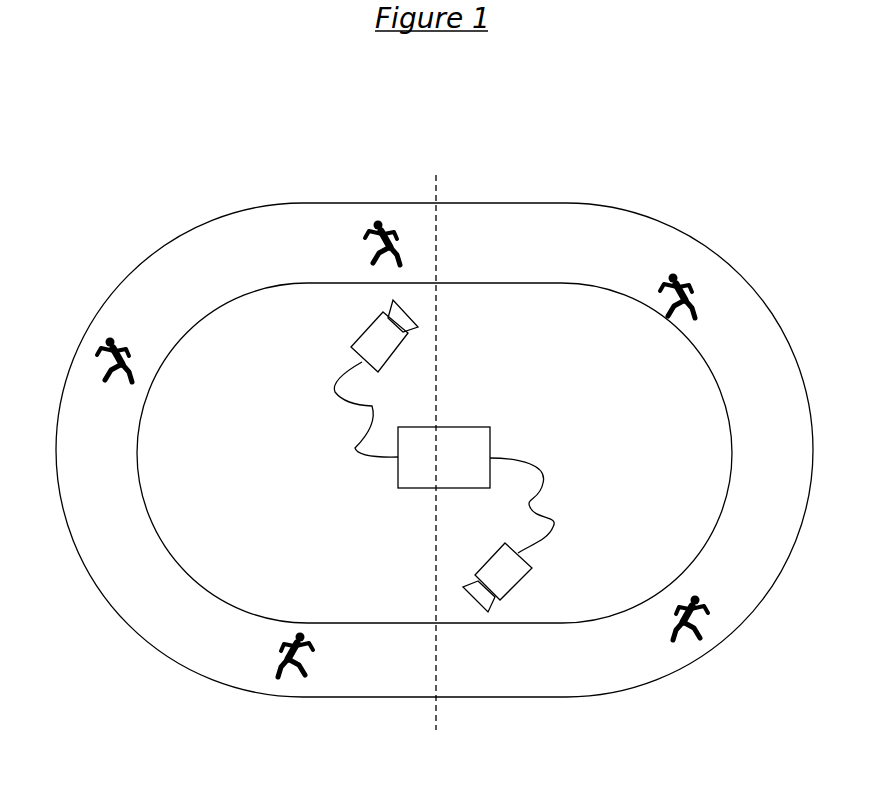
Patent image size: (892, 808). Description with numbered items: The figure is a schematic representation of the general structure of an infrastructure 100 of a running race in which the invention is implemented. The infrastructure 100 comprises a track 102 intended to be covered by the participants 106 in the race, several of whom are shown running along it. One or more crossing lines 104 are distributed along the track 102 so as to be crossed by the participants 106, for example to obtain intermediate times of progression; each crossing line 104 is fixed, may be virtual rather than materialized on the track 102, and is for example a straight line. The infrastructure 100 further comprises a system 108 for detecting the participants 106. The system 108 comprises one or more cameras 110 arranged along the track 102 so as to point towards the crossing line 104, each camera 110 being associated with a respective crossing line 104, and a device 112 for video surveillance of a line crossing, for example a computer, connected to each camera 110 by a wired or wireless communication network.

The infrastructure 100 is at (181, 144).
The track 102 is at (198, 227).
The crossing line 104 is at (437, 184).
The participants 106 is at (127, 343).
The system 108 is at (303, 528).
The camera 110 is at (352, 345).
The device 112 is at (462, 474).